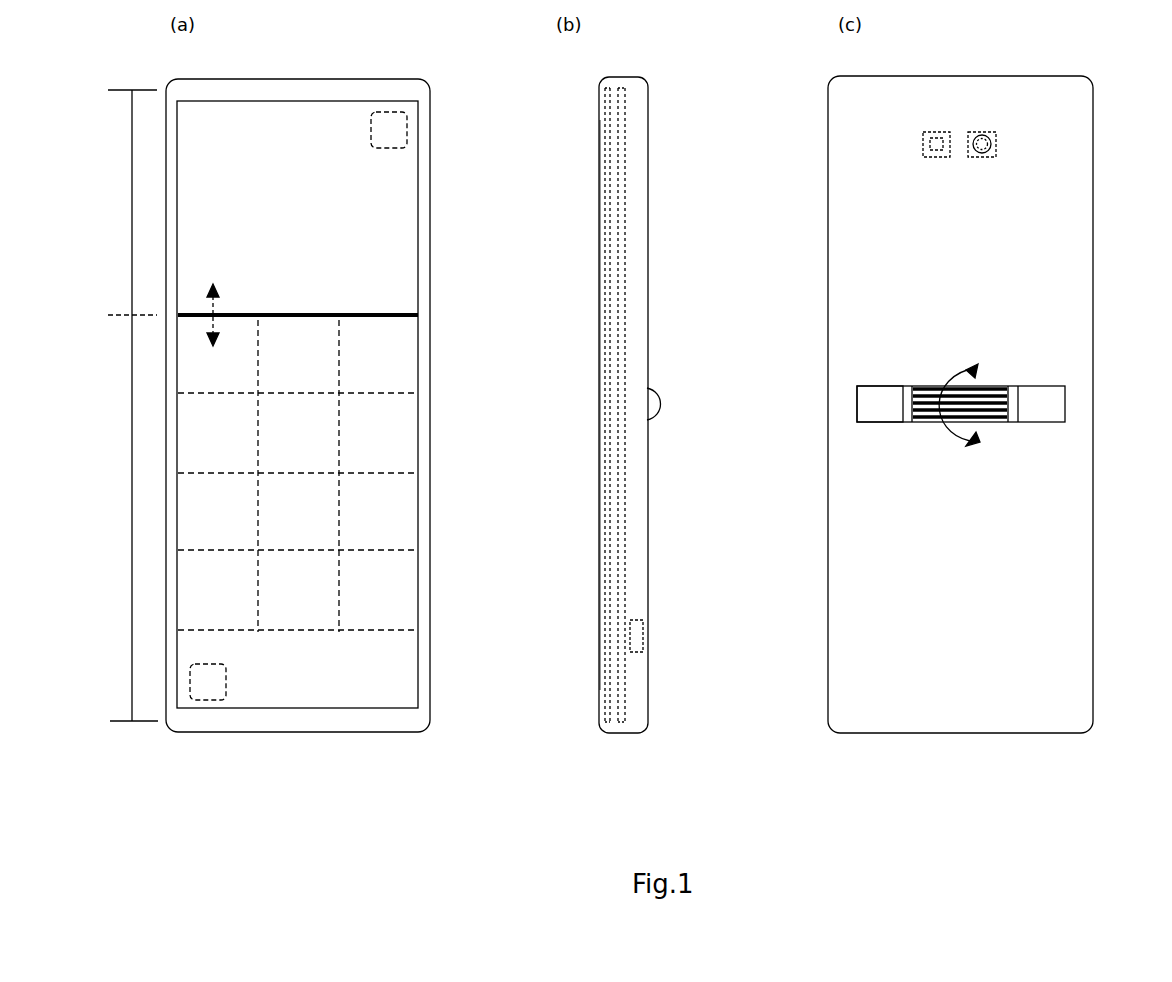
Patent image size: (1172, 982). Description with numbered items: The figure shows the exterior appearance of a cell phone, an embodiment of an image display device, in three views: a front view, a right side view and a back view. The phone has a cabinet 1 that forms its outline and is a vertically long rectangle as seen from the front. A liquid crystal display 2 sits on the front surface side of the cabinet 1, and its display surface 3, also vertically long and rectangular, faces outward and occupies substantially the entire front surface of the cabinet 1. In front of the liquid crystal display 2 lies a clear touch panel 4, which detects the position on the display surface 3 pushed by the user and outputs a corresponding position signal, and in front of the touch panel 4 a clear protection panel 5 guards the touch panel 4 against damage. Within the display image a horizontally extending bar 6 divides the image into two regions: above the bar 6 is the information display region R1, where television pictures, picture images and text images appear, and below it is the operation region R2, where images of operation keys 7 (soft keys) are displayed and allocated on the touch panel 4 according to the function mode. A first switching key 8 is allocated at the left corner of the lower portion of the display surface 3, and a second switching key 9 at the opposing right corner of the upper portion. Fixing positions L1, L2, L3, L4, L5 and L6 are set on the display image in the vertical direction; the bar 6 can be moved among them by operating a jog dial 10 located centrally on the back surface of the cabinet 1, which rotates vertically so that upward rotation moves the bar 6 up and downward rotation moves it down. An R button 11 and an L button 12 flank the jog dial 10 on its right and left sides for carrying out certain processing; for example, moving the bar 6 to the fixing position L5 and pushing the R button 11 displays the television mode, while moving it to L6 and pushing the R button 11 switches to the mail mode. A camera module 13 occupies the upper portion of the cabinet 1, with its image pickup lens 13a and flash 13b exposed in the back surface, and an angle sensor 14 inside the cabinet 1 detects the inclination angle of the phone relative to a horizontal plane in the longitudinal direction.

The cabinet 1 is at (430, 122).
The liquid crystal display 2 is at (618, 250).
The display surface 3 is at (420, 200).
The touch panel 4 is at (616, 300).
The protection panel 5 is at (597, 330).
The bar 6 is at (373, 313).
The operation keys 7 is at (212, 437).
The first switching key 8 is at (212, 702).
The second switching key 9 is at (396, 112).
The jog dial 10 is at (986, 388).
The R button 11 is at (1042, 404).
The L button 12 is at (656, 390).
The camera module 13 is at (634, 152).
The image pickup lens 13a is at (982, 132).
The flash 13b is at (937, 132).
The angle sensor 14 is at (644, 624).
The fixing position L1 is at (432, 653).
The fixing position L2 is at (432, 585).
The fixing position L3 is at (432, 519).
The fixing position L4 is at (432, 451).
The fixing position L5 is at (432, 384).
The fixing position L6 is at (432, 316).
The information display region R1 is at (130, 202).
The operation region R2 is at (130, 518).